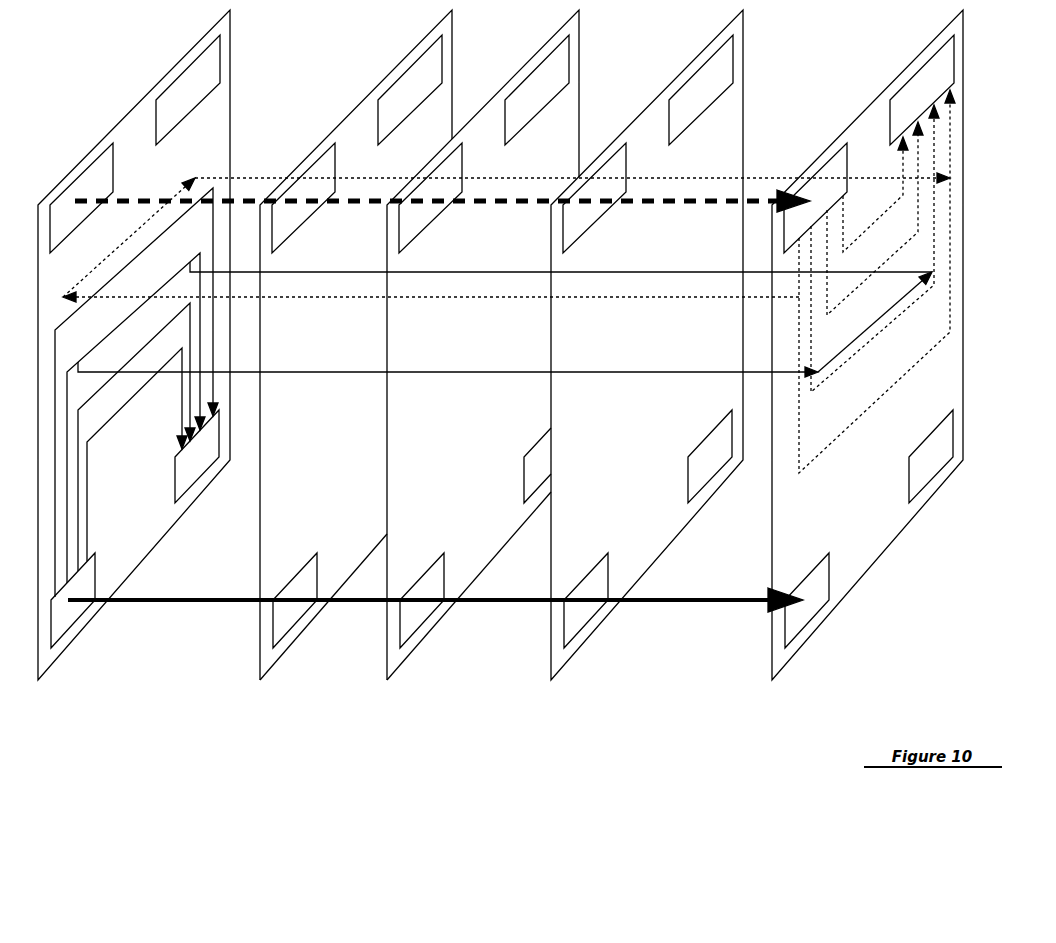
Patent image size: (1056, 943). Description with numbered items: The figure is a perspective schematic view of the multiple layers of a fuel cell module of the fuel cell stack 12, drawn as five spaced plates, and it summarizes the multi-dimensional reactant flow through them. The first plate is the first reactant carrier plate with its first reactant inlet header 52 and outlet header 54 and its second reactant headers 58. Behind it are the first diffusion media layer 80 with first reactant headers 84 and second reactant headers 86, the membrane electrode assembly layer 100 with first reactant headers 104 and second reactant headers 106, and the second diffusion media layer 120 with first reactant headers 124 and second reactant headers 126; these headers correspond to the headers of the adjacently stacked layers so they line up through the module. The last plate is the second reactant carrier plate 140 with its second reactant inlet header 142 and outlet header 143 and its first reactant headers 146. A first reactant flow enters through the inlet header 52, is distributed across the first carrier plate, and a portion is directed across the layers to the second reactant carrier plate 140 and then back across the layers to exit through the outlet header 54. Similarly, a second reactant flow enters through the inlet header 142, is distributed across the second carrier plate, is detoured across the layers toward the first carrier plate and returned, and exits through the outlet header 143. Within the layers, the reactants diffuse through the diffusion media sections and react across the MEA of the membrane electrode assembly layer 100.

The fuel cell stack 12 is at (232, 88).
The first reactant inlet header 52 is at (68, 632).
The first reactant outlet header 54 is at (195, 490).
The second reactant headers 58 is at (183, 72).
The first diffusion media layer 80 is at (452, 78).
The first reactant headers 84 is at (284, 635).
The second reactant headers 86 is at (414, 62).
The membrane electrode assembly layer 100 is at (581, 26).
The first reactant headers 104 is at (421, 625).
The second reactant headers 106 is at (539, 64).
The second diffusion media layer 120 is at (745, 88).
The first reactant headers 124 is at (586, 625).
The second reactant headers 126 is at (702, 65).
The second reactant carrier plate 140 is at (965, 136).
The second reactant inlet header 142 is at (826, 160).
The second reactant outlet header 143 is at (917, 72).
The first reactant headers 146 is at (932, 484).